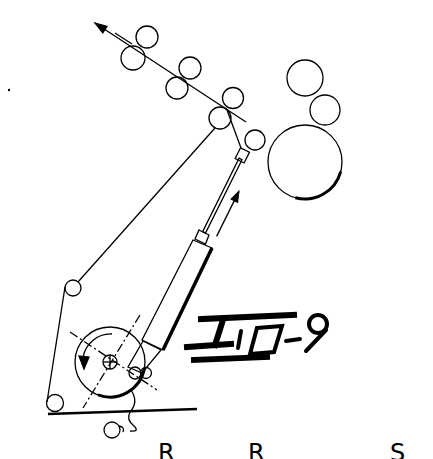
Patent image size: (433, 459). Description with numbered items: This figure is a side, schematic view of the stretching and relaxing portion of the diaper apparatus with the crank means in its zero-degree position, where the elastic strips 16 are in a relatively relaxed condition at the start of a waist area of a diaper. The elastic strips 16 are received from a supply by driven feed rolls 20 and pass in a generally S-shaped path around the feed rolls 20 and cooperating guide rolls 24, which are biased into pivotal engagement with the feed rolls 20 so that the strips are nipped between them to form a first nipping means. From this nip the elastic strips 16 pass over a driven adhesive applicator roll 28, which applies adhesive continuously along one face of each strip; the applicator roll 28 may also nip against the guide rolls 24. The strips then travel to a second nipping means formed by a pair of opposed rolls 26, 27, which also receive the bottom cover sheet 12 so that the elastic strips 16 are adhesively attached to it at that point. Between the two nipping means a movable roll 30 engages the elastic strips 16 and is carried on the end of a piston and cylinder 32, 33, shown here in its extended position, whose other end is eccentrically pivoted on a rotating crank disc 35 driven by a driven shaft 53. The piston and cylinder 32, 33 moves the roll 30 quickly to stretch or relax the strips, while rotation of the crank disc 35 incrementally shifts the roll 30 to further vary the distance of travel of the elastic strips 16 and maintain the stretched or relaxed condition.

The bottom cover sheet 12 is at (127, 218).
The elastic strips 16 is at (300, 62).
The feed rolls 20 is at (300, 62).
The guide rolls 24 is at (340, 109).
The opposed roll 26 is at (240, 66).
The opposed roll 27 is at (209, 119).
The adhesive applicator roll 28 is at (342, 160).
The elastic strip engaging roll 30 is at (258, 131).
The piston 32 is at (217, 209).
The cylinder 33 is at (180, 264).
The crank disc 35 is at (145, 384).
The driven shaft 53 is at (108, 328).